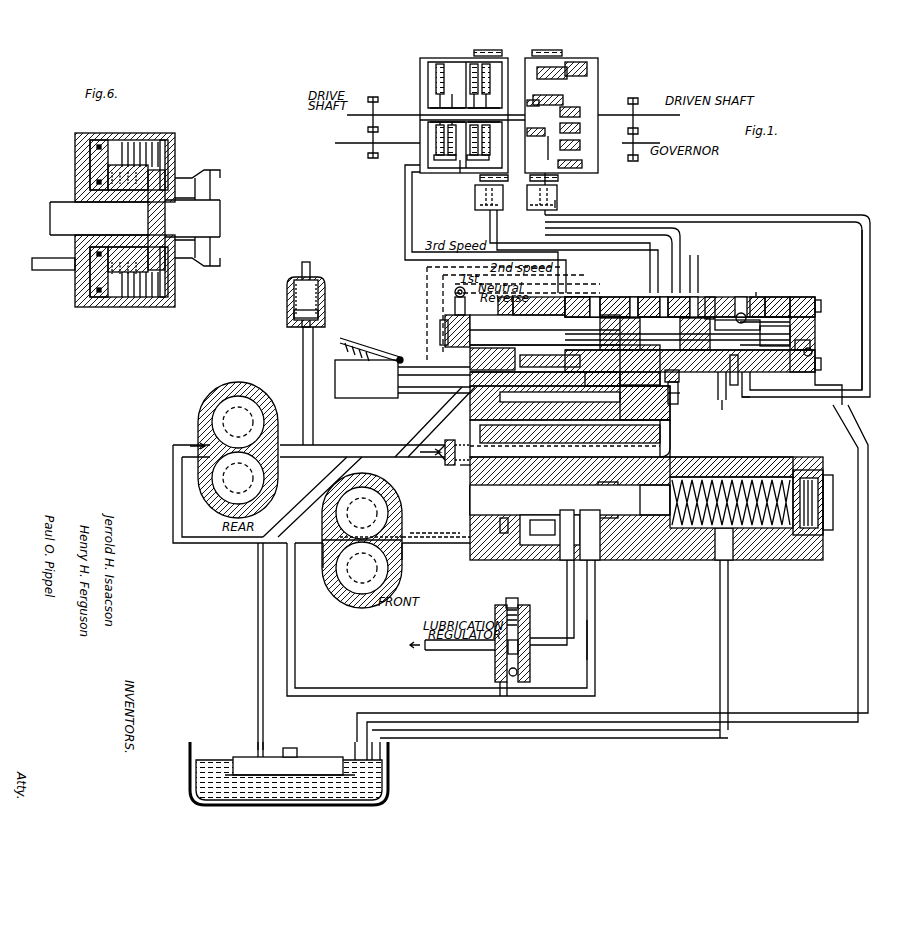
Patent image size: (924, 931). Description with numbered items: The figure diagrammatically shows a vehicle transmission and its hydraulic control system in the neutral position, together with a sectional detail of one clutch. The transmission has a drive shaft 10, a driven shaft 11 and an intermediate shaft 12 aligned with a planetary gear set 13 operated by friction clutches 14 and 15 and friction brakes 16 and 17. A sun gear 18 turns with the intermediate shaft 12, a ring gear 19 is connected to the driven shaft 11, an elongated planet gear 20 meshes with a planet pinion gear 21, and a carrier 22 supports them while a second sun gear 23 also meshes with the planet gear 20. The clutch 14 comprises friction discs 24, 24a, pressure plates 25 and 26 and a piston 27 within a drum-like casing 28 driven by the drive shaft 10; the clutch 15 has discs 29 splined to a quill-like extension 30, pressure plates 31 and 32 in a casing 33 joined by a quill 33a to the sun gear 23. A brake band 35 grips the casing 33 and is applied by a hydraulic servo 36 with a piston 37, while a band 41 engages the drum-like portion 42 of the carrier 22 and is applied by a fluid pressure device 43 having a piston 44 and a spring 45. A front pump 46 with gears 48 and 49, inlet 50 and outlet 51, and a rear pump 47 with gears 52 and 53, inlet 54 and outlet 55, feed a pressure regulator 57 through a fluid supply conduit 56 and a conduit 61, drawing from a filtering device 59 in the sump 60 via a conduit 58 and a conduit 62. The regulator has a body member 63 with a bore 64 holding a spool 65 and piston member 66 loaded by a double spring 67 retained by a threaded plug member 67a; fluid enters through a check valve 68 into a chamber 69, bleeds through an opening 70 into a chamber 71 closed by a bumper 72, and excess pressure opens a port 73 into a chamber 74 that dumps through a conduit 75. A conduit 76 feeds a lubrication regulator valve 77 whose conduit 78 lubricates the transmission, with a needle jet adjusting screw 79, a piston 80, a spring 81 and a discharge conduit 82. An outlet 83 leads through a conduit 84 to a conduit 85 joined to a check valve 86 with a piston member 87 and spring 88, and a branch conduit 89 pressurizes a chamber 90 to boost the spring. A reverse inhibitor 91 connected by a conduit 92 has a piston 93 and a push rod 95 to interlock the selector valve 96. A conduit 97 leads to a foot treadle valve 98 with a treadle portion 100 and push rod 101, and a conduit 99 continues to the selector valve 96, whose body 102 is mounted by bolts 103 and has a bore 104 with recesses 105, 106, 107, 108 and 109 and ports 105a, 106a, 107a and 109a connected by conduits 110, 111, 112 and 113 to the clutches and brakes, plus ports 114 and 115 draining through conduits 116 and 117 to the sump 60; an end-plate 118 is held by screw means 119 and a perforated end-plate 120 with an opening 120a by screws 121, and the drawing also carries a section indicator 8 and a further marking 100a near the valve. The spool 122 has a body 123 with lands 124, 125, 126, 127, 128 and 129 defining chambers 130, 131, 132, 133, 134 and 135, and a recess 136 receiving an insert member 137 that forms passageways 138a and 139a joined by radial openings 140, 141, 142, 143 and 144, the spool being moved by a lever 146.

In FIG. 1, the pressure line to governor valve 8 is at (758, 290).
In FIG. 6, the drive shaft 10 is at (55, 212).
In FIG. 1, the drive shaft 10 is at (347, 115).
In FIG. 1, the driven shaft 11 is at (650, 118).
In FIG. 6, the intermediate shaft 12 is at (212, 213).
In FIG. 1, the intermediate shaft 12 is at (425, 110).
In FIG. 1, the planetary gear set 13 is at (603, 65).
In FIG. 1, the friction clutch 14 is at (418, 62).
In FIG. 1, the friction clutch 15 is at (512, 62).
In FIG. 1, the friction brake 16 is at (488, 50).
In FIG. 1, the friction brake 17 is at (552, 50).
In FIG. 1, the sun gear 18 is at (583, 108).
In FIG. 1, the ring gear 19 is at (578, 72).
In FIG. 1, the planet gear 20 is at (588, 97).
In FIG. 1, the planet pinion gear 21 is at (583, 140).
In FIG. 1, the carrier 22 is at (560, 166).
In FIG. 1, the second sun gear 23 is at (556, 150).
In FIG. 6, the friction disc 24 is at (142, 300).
In FIG. 1, the friction disc 24 is at (452, 165).
In FIG. 6, the friction disc 24a is at (115, 297).
In FIG. 1, the friction disc 24a is at (437, 160).
In FIG. 6, the pressure plate 25 is at (160, 300).
In FIG. 1, the pressure plate 25 is at (460, 170).
In FIG. 6, the pressure plate 26 is at (120, 300).
In FIG. 1, the pressure plate 26 is at (444, 160).
In FIG. 6, the piston 27 is at (78, 294).
In FIG. 1, the piston 27 is at (420, 158).
In FIG. 6, the casing 28 is at (78, 138).
In FIG. 1, the casing 28 is at (428, 140).
In FIG. 1, the friction disc 29 is at (450, 150).
In FIG. 6, the quill-like extension 30 is at (206, 248).
In FIG. 1, the quill-like extension 30 is at (486, 150).
In FIG. 1, the pressure plate 31 is at (482, 160).
In FIG. 1, the pressure plate 32 is at (445, 62).
In FIG. 1, the casing 33 is at (535, 100).
In FIG. 1, the quill-like extension 33a is at (530, 128).
In FIG. 1, the brake band 35 is at (478, 62).
In FIG. 1, the hydraulic servo 36 is at (498, 214).
In FIG. 1, the piston 37 is at (488, 218).
In FIG. 1, the brake band 41 is at (565, 52).
In FIG. 1, the drum-like portion 42 is at (570, 182).
In FIG. 1, the fluid pressure device 43 is at (556, 203).
In FIG. 1, the piston 44 is at (562, 206).
In FIG. 1, the spring 45 is at (540, 212).
In FIG. 1, the front pump 46 is at (345, 615).
In FIG. 1, the rear pump 47 is at (196, 410).
In FIG. 1, the pump gear 48 is at (378, 495).
In FIG. 1, the pump gear 49 is at (372, 595).
In FIG. 1, the inlet 50 is at (328, 545).
In FIG. 1, the outlet 51 is at (404, 548).
In FIG. 1, the pump gear 52 is at (238, 410).
In FIG. 1, the pump gear 53 is at (212, 478).
In FIG. 1, the inlet 54 is at (200, 452).
In FIG. 1, the outlet 55 is at (278, 448).
In FIG. 1, the fluid supply conduit 56 is at (452, 548).
In FIG. 1, the pressure regulator 57 is at (668, 562).
In FIG. 1, the conduit 58 is at (295, 640).
In FIG. 1, the oil filtering device 59 is at (318, 757).
In FIG. 1, the sump 60 is at (398, 775).
In FIG. 1, the conduit 61 is at (338, 450).
In FIG. 1, the conduit 62 is at (173, 497).
In FIG. 1, the body member 63 is at (742, 465).
In FIG. 1, the bore 64 is at (770, 532).
In FIG. 1, the spool 65 is at (598, 562).
In FIG. 1, the piston member 66 is at (715, 540).
In FIG. 1, the double spring 67 is at (803, 535).
In FIG. 1, the threaded plug member 67a is at (815, 465).
In FIG. 1, the check valve 68 is at (530, 530).
In FIG. 1, the chamber 69 is at (500, 520).
In FIG. 1, the bleed opening 70 is at (470, 490).
In FIG. 1, the chamber 71 is at (470, 520).
In FIG. 1, the bumper 72 is at (470, 502).
In FIG. 1, the port 73 is at (620, 545).
In FIG. 1, the chamber 74 is at (608, 488).
In FIG. 1, the conduit 75 is at (595, 633).
In FIG. 1, the conduit 76 is at (567, 596).
In FIG. 1, the lubrication regulator valve 77 is at (495, 665).
In FIG. 1, the conduit 78 is at (450, 650).
In FIG. 1, the needle jet adjusting screw 79 is at (505, 604).
In FIG. 1, the piston 80 is at (525, 660).
In FIG. 1, the spring 81 is at (520, 675).
In FIG. 1, the conduit 82 is at (500, 688).
In FIG. 1, the outlet 83 is at (565, 459).
In FIG. 1, the conduit 84 is at (540, 448).
In FIG. 1, the conduit 85 is at (462, 468).
In FIG. 1, the check valve 86 is at (440, 447).
In FIG. 1, the piston member 87 is at (438, 452).
In FIG. 1, the spring 88 is at (456, 447).
In FIG. 1, the branch conduit 89 is at (660, 447).
In FIG. 1, the chamber 90 is at (672, 455).
In FIG. 1, the reverse inhibitor 91 is at (325, 282).
In FIG. 1, the conduit 92 is at (303, 350).
In FIG. 1, the piston 93 is at (320, 310).
In FIG. 1, the push rod 95 is at (308, 262).
In FIG. 1, the selector valve 96 is at (806, 290).
In FIG. 1, the conduit 97 is at (570, 420).
In FIG. 1, the foot treadle valve 98 is at (350, 398).
In FIG. 1, the conduit 99 is at (400, 360).
In FIG. 1, the treadle portion 100 is at (355, 340).
In FIG. 1, the port 100a is at (705, 297).
In FIG. 1, the push rod 101 is at (366, 379).
In FIG. 1, the body 102 is at (800, 297).
In FIG. 1, the bolts 103 is at (512, 388).
In FIG. 1, the bore 104 is at (818, 300).
In FIG. 1, the annular recess 105 is at (505, 362).
In FIG. 1, the port 105a is at (580, 297).
In FIG. 1, the annular recess 106 is at (575, 297).
In FIG. 1, the port 106a is at (610, 382).
In FIG. 1, the annular recess 107 is at (645, 403).
In FIG. 1, the port 107a is at (665, 284).
In FIG. 1, the annular recess 108 is at (690, 391).
In FIG. 1, the annular recess 109 is at (745, 297).
In FIG. 1, the port 109a is at (740, 395).
In FIG. 1, the conduit 110 is at (405, 222).
In FIG. 1, the conduit 111 is at (672, 240).
In FIG. 1, the conduit 112 is at (690, 255).
In FIG. 1, the conduit 113 is at (872, 338).
In FIG. 1, the port 114 is at (512, 345).
In FIG. 1, the port 115 is at (805, 345).
In FIG. 1, the conduit 116 is at (455, 240).
In FIG. 1, the conduit 117 is at (870, 430).
In FIG. 1, the end-plate 118 is at (812, 352).
In FIG. 1, the screw means 119 is at (815, 365).
In FIG. 1, the perforated end-plate 120 is at (520, 372).
In FIG. 1, the opening 120a is at (505, 318).
In FIG. 1, the screws 121 is at (498, 303).
In FIG. 1, the spool 122 is at (437, 322).
In FIG. 1, the spool body 123 is at (450, 345).
In FIG. 1, the land 124 is at (548, 380).
In FIG. 1, the land 125 is at (595, 350).
In FIG. 1, the land 126 is at (686, 397).
In FIG. 1, the land 127 is at (720, 395).
In FIG. 1, the land 128 is at (760, 372).
In FIG. 1, the land 129 is at (775, 372).
In FIG. 1, the fluid chamber 130 is at (527, 340).
In FIG. 1, the fluid chamber 131 is at (603, 297).
In FIG. 1, the fluid chamber 132 is at (655, 334).
In FIG. 1, the fluid chamber 133 is at (712, 300).
In FIG. 1, the fluid chamber 134 is at (760, 310).
In FIG. 1, the fluid chamber 135 is at (684, 337).
In FIG. 1, the longitudinal recess 136 is at (627, 297).
In FIG. 1, the insert member 137 is at (790, 322).
In FIG. 1, the passageway 138a is at (660, 297).
In FIG. 1, the passageway 139a is at (795, 330).
In FIG. 1, the radial opening 140 is at (640, 297).
In FIG. 1, the radial opening 141 is at (740, 330).
In FIG. 1, the radial opening 142 is at (772, 305).
In FIG. 1, the radial opening 143 is at (674, 374).
In FIG. 1, the radial opening 144 is at (722, 410).
In FIG. 1, the lever 146 is at (455, 292).